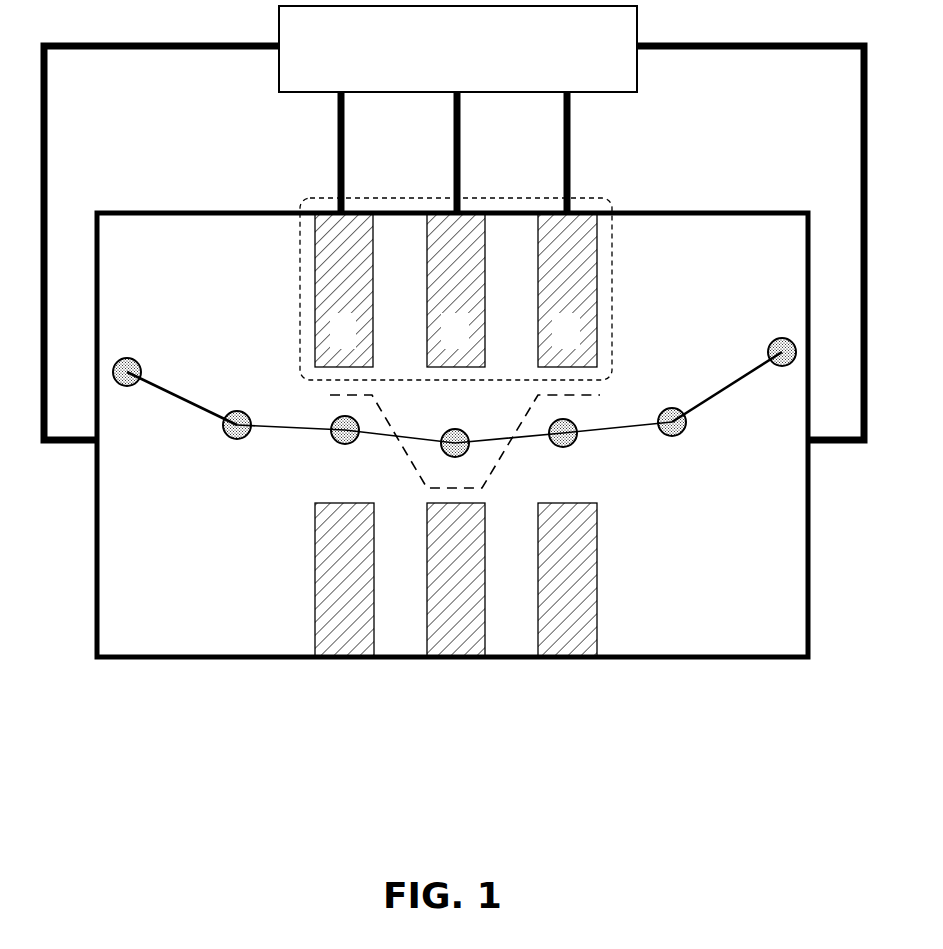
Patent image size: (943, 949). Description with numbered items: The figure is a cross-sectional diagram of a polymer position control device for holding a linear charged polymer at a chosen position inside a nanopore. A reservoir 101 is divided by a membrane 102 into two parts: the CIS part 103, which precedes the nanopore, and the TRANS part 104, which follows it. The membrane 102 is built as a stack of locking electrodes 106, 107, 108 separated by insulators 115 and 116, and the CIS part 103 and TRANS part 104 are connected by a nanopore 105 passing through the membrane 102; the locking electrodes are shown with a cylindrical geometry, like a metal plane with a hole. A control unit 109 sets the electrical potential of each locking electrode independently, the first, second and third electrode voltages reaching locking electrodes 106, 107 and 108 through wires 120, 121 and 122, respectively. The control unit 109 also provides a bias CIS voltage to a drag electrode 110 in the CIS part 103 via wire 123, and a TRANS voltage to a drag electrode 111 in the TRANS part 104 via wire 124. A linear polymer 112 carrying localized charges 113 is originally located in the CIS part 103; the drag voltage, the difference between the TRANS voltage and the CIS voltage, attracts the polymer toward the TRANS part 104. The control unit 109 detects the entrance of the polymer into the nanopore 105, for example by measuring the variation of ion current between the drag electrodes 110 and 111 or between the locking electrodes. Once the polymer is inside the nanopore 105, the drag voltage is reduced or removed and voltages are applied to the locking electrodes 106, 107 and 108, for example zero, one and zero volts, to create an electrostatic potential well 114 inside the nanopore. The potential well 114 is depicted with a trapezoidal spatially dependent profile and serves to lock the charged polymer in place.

The reservoir 101 is at (125, 188).
The membrane 102 is at (433, 197).
The CIS part 103 is at (240, 237).
The TRANS part 104 is at (743, 233).
The nanopore 105 is at (330, 473).
The locking electrode 106 is at (343, 658).
The locking electrode 107 is at (467, 658).
The locking electrode 108 is at (580, 658).
The control unit 109 is at (307, 93).
The drag electrode 110 is at (86, 454).
The drag electrode 111 is at (820, 454).
The linear polymer 112 is at (168, 392).
The localized charges 113 is at (340, 443).
The potential well 114 is at (322, 395).
The insulator 115 is at (395, 658).
The insulator 116 is at (518, 658).
The wire 120 is at (337, 152).
The wire 121 is at (454, 128).
The wire 122 is at (564, 128).
The wire 123 is at (105, 49).
The wire 124 is at (700, 49).